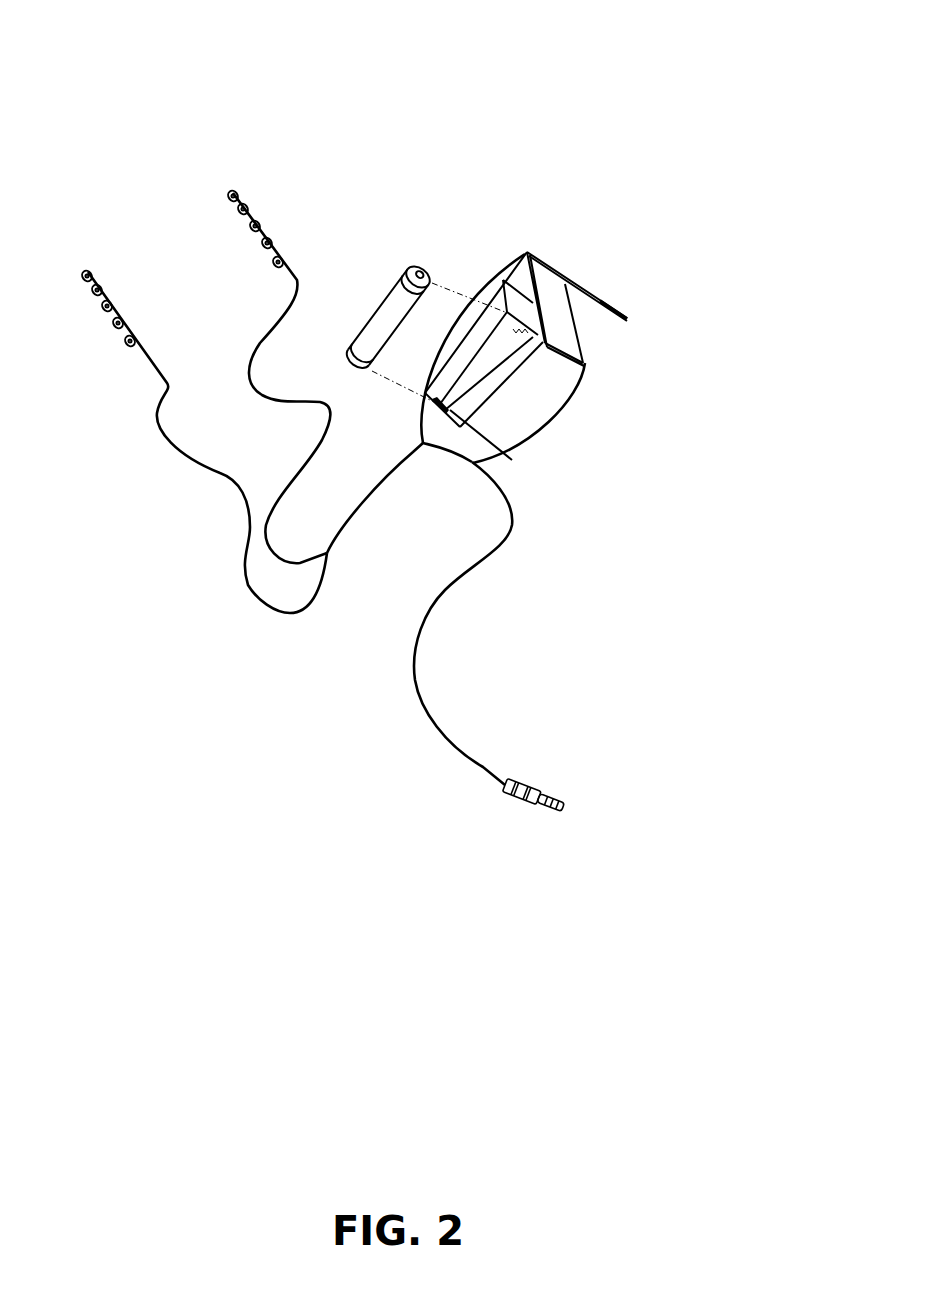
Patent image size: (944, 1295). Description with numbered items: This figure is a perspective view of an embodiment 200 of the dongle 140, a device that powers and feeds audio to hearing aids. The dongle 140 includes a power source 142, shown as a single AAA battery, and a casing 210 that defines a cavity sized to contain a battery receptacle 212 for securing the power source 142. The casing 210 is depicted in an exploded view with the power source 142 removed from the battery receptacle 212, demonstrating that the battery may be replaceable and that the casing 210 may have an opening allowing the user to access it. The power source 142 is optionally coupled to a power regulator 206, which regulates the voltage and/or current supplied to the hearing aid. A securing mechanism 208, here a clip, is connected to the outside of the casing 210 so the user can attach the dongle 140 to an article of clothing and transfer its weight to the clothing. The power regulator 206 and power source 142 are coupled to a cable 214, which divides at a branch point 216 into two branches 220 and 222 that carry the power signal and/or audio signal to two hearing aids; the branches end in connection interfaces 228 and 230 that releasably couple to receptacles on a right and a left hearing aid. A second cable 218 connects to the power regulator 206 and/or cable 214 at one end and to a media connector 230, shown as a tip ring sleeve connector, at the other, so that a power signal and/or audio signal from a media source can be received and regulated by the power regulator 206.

The embodiment of dongle 200 is at (121, 42).
The dongle 140 is at (427, 151).
The power source 142 is at (400, 270).
The power regulator 206 is at (527, 252).
The securing mechanism 208 is at (584, 330).
The casing 210 is at (533, 420).
The battery receptacle 212 is at (512, 460).
The cable 214 is at (224, 615).
The branch point 216 is at (327, 553).
The second cable 218 is at (433, 607).
The branch 220 is at (287, 403).
The branch 222 is at (187, 460).
The connection interface 228 is at (118, 325).
The connection interface / media connector 230 is at (257, 232).